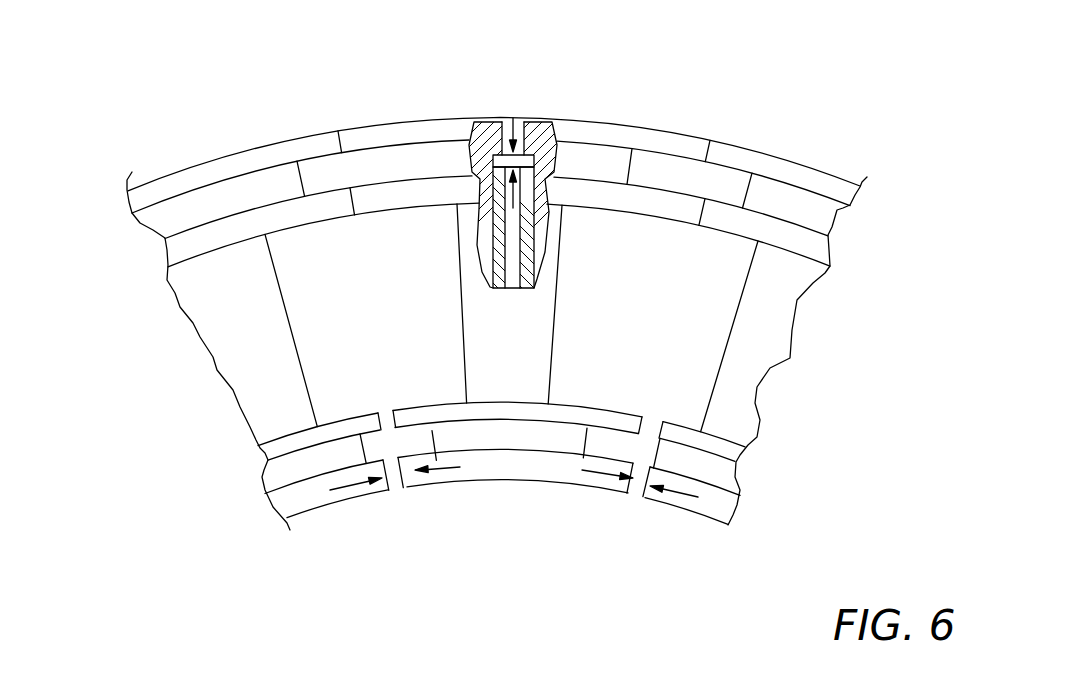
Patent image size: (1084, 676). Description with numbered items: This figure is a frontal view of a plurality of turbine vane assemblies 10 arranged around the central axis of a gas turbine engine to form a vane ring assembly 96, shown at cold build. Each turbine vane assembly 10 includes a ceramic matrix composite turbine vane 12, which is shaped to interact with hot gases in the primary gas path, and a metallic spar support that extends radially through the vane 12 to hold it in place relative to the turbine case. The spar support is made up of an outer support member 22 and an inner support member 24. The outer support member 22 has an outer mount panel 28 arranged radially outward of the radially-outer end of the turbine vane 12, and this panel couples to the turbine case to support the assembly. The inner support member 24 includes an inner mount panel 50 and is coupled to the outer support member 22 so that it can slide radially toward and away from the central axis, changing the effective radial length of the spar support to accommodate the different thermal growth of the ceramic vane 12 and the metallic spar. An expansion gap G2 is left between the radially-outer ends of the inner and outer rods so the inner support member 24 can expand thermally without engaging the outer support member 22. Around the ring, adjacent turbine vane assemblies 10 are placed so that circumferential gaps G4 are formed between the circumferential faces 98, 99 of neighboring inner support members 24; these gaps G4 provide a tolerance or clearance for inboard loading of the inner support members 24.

The vane ring assembly 96 is at (111, 86).
The turbine vane assembly 10 is at (268, 119).
The outer mount panel 28 is at (405, 122).
The outer support member 22 is at (653, 111).
The turbine vane 12 is at (582, 312).
The expansion gap G2 is at (513, 162).
The circumferential face 99 is at (628, 513).
The inner support member 24 is at (502, 520).
The inner mount panel 50 is at (497, 483).
The circumferential face 98 is at (408, 487).
The circumferential gap G4 is at (405, 490).